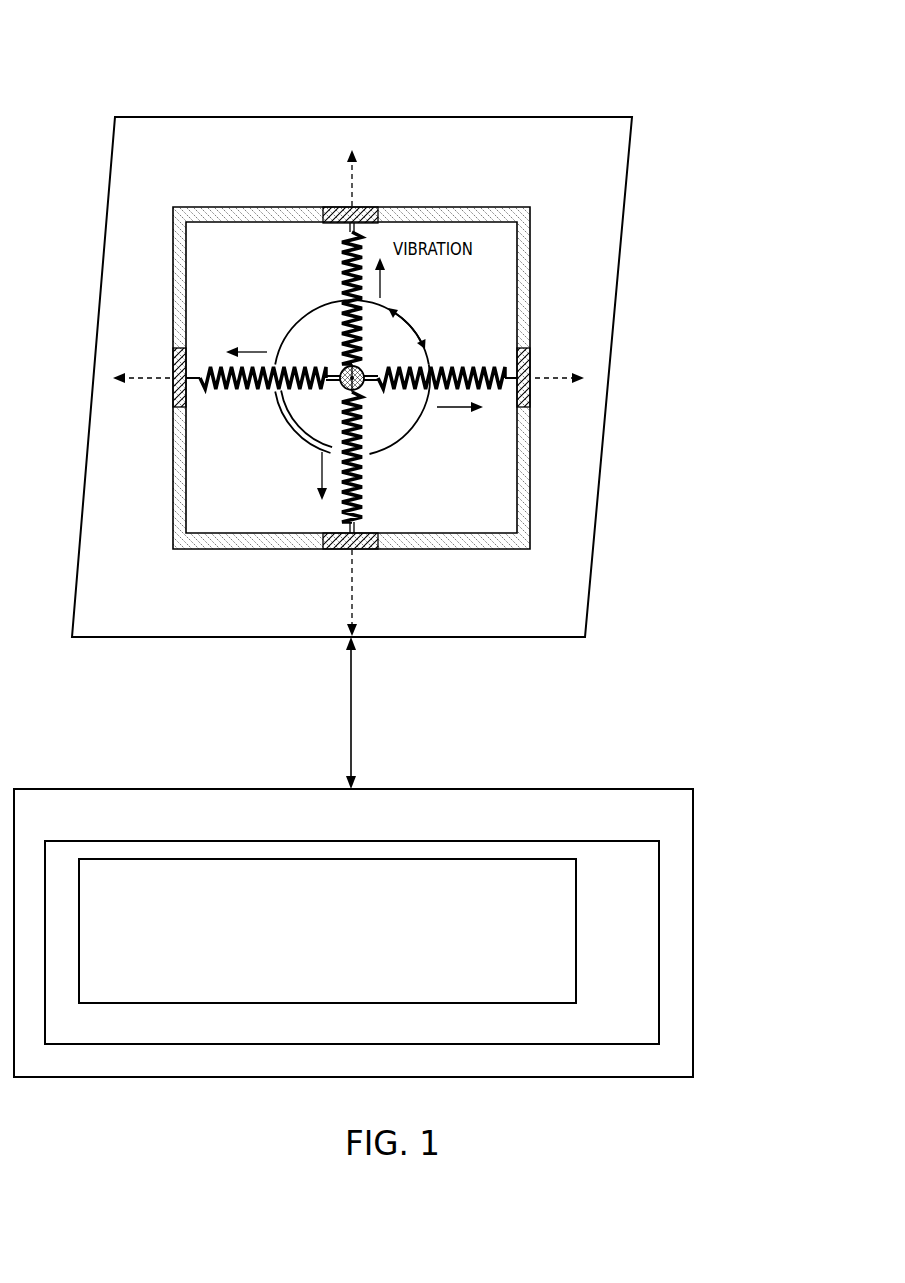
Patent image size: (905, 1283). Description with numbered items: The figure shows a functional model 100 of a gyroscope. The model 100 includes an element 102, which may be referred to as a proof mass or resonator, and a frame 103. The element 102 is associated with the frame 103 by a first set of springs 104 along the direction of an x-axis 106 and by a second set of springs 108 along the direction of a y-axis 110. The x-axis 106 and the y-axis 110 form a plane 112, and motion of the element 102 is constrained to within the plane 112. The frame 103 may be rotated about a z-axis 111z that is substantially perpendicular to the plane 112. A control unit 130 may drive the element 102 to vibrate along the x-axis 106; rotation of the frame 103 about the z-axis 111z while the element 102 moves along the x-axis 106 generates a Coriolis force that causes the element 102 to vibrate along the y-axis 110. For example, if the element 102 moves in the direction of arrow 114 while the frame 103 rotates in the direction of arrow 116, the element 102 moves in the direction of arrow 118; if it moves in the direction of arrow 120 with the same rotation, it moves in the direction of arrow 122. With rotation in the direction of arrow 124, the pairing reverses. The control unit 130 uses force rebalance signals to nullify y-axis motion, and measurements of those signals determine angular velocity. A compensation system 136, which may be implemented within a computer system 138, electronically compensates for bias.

The model 100 is at (446, 62).
The plane 112 is at (500, 108).
The frame 103 is at (391, 207).
The y-axis 110 is at (350, 183).
The x-axis 106 is at (547, 380).
The second set of springs 108 is at (342, 278).
The first set of springs 104 is at (226, 392).
The element 102 is at (343, 384).
The z-axis 111z is at (360, 372).
The arrow 124 is at (292, 346).
The arrow 116 is at (392, 457).
The arrow 120 is at (253, 352).
The arrow 122 is at (381, 292).
The arrow 114 is at (452, 408).
The arrow 118 is at (322, 472).
The control unit 130 is at (694, 1040).
The compensation system 136 is at (660, 942).
The computer system 138 is at (577, 925).